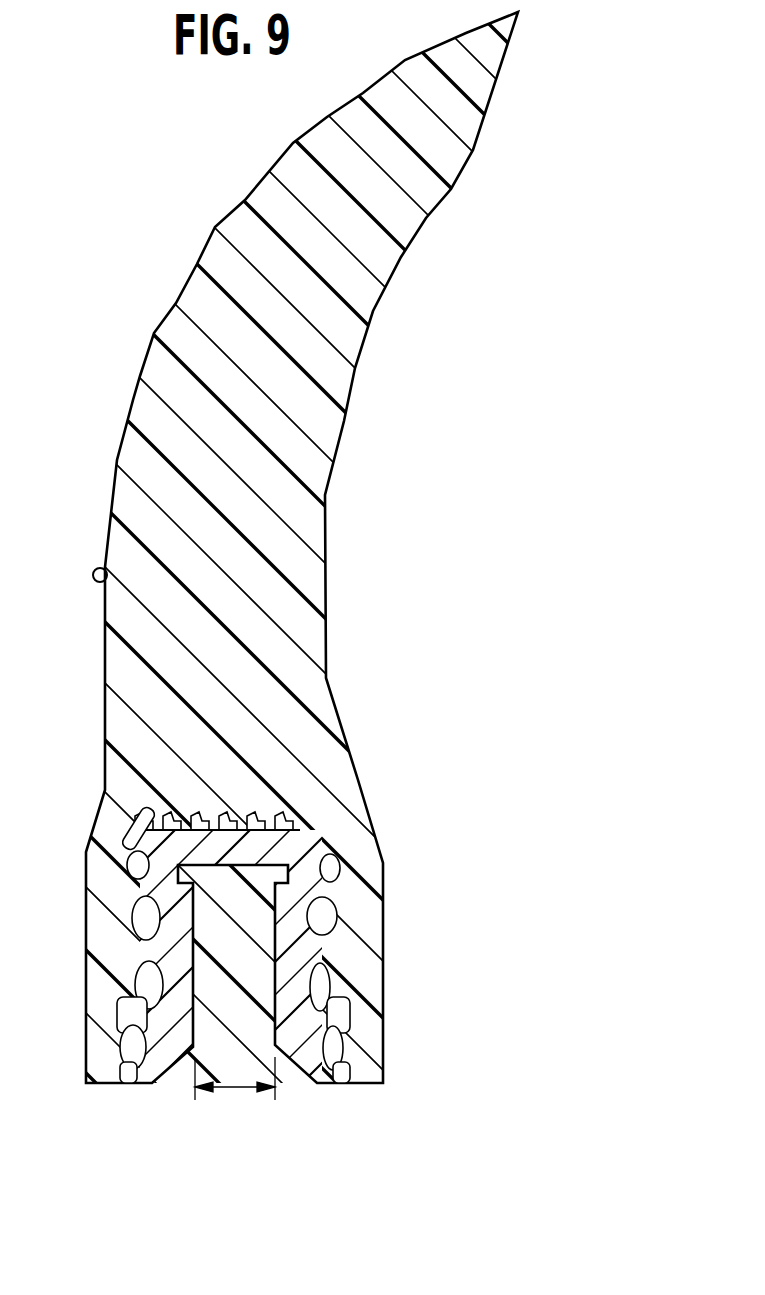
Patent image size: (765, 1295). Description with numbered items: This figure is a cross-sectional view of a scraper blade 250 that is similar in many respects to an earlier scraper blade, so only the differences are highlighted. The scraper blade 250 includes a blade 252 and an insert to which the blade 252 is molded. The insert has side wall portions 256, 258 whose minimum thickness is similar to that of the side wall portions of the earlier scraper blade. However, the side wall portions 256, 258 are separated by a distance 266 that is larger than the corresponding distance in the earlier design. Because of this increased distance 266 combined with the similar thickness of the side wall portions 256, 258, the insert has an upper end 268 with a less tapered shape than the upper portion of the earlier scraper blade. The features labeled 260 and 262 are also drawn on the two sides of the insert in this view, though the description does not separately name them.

The scraper blade 250 is at (382, 647).
The blade 252 is at (342, 335).
The side wall portion 256 is at (173, 997).
The side wall portion 258 is at (293, 990).
The first interlocking member 260 is at (140, 937).
The second interlocking member 262 is at (293, 923).
The distance 266 is at (237, 1100).
The upper end 268 is at (135, 828).